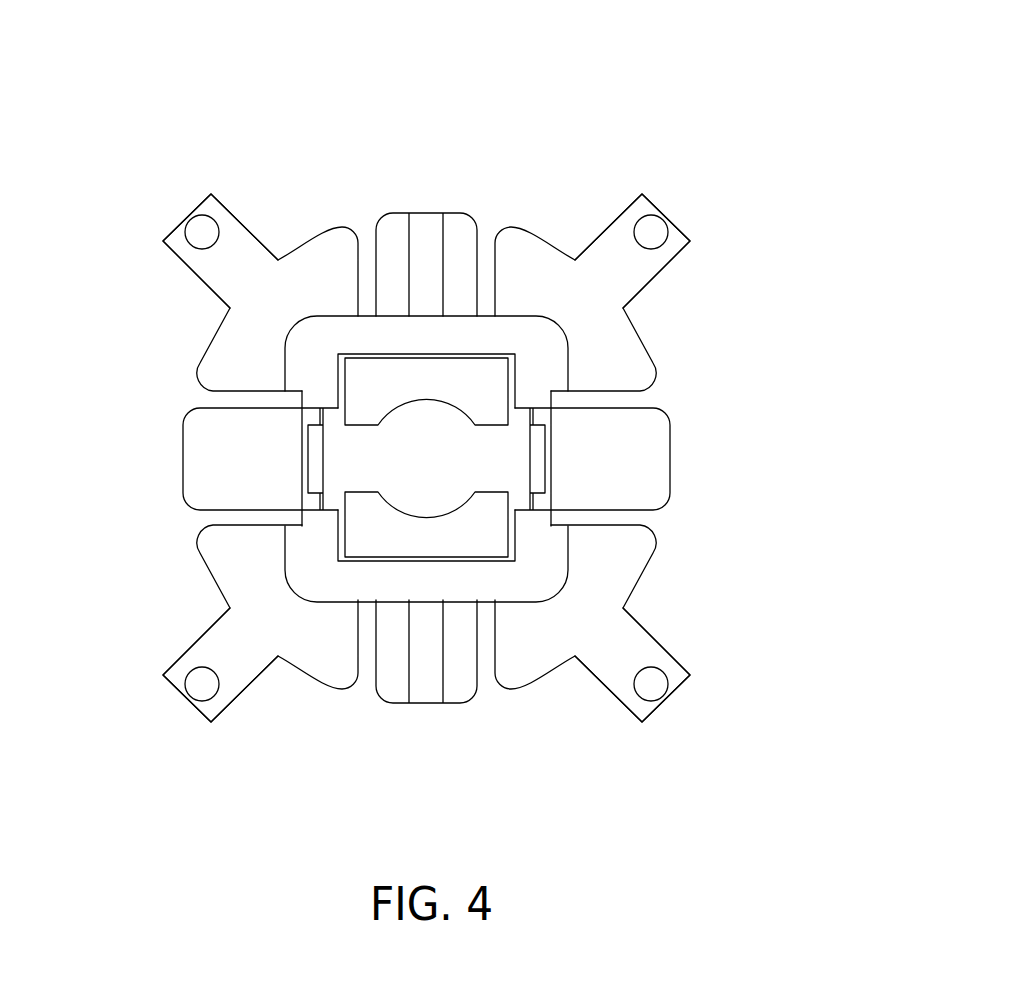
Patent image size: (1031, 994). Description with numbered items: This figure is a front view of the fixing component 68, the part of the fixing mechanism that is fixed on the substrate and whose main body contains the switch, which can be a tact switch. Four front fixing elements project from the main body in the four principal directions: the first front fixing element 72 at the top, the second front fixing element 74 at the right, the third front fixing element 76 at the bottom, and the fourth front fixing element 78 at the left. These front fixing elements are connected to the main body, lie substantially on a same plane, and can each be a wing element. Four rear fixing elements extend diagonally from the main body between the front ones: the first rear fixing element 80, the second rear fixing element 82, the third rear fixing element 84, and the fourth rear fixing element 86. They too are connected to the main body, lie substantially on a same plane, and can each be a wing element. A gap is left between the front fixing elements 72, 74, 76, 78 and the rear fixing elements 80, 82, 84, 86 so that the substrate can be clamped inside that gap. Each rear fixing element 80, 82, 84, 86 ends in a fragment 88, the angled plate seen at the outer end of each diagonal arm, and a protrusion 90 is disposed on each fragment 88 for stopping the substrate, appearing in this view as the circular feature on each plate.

The fixing component 68 is at (537, 427).
The first front fixing element 72 is at (458, 213).
The second front fixing element 74 is at (670, 462).
The third front fixing element 76 is at (458, 702).
The fourth front fixing element 78 is at (183, 462).
The first rear fixing element 80 is at (639, 292).
The second rear fixing element 82 is at (639, 623).
The third rear fixing element 84 is at (158, 586).
The fourth rear fixing element 86 is at (156, 318).
The fragment 88 is at (231, 213).
The protrusion 90 is at (195, 227).